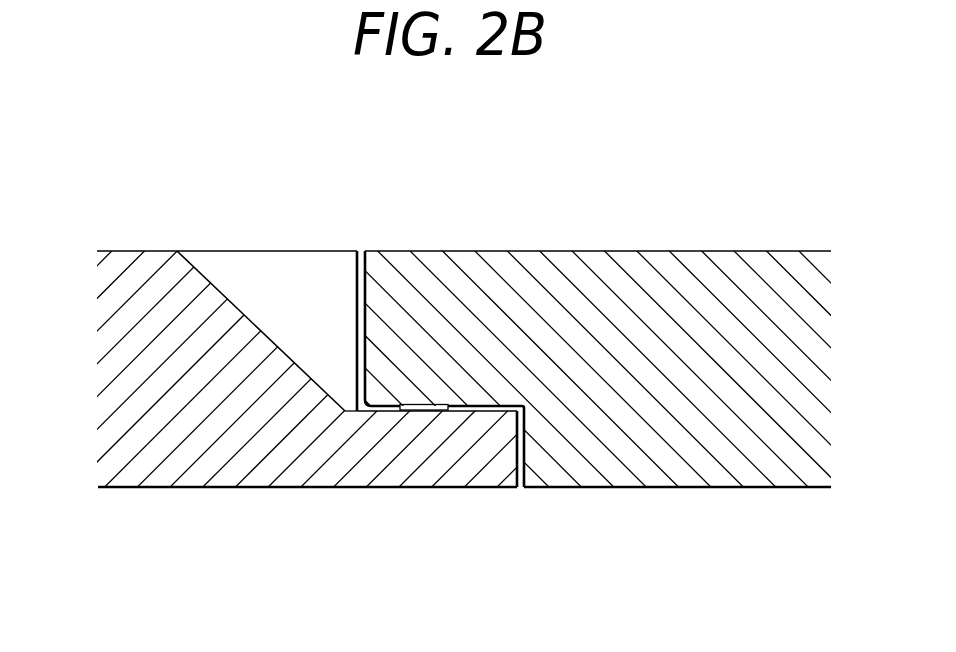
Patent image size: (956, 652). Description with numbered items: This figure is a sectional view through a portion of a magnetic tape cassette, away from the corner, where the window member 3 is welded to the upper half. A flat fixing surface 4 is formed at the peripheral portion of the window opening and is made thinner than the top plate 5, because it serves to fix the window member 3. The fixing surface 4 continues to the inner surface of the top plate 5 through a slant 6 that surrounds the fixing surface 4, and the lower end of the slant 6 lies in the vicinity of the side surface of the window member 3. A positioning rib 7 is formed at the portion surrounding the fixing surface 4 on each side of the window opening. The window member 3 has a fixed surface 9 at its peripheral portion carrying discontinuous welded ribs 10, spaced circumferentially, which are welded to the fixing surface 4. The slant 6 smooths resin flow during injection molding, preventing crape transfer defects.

The window member 3 is at (626, 243).
The fixing surface 4 is at (477, 403).
The top plate 5 is at (136, 244).
The slant 6 is at (257, 310).
The positioning rib 7 is at (315, 283).
The fixed surface 9 is at (380, 408).
The welded rib 10 is at (422, 410).